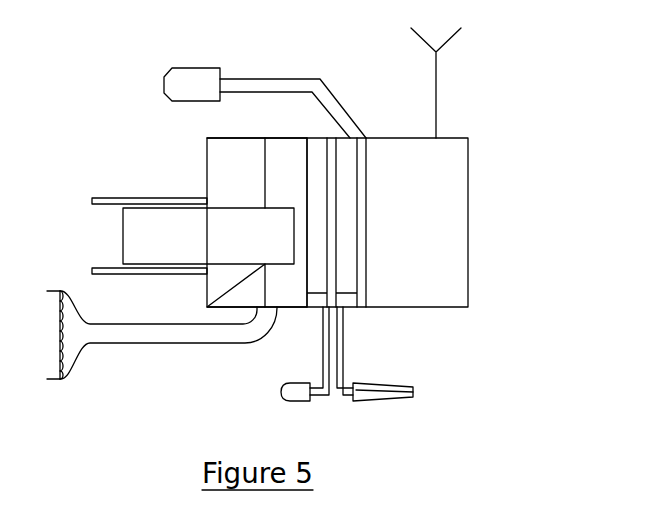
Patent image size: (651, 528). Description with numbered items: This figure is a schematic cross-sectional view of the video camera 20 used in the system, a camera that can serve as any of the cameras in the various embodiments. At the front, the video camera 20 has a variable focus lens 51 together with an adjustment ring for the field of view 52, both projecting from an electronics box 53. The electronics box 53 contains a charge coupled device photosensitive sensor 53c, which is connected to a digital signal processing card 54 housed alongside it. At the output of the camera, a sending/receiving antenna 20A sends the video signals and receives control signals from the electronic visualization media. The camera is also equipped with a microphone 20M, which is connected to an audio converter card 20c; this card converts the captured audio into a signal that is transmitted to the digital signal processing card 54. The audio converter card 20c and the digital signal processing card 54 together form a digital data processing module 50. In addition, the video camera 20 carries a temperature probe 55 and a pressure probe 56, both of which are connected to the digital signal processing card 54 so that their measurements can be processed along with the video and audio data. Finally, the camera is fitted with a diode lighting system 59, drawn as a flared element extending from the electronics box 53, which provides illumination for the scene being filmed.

The video camera 20 is at (112, 113).
The microphone 20M is at (203, 64).
The sending/receiving antenna 20A is at (436, 98).
The audio converter card 20c is at (357, 177).
The digital data processing module 50 is at (366, 227).
The variable focus lens 51 is at (123, 232).
The adjustment ring for the field of view 52 is at (153, 198).
The electronics box 53 is at (276, 138).
The charge coupled device (CCD) photosensitive sensor 53c is at (305, 275).
The digital signal processing card 54 is at (326, 157).
The temperature probe 55 is at (396, 382).
The pressure probe 56 is at (295, 402).
The diode lighting system 59 is at (172, 332).